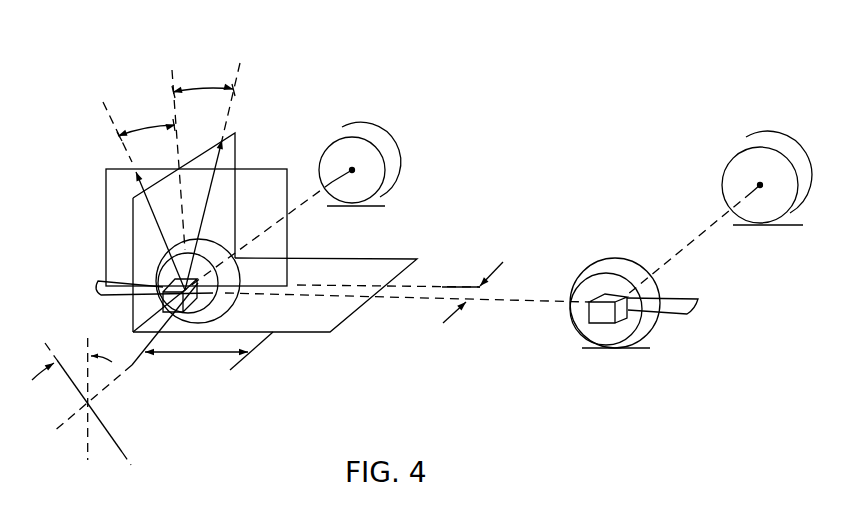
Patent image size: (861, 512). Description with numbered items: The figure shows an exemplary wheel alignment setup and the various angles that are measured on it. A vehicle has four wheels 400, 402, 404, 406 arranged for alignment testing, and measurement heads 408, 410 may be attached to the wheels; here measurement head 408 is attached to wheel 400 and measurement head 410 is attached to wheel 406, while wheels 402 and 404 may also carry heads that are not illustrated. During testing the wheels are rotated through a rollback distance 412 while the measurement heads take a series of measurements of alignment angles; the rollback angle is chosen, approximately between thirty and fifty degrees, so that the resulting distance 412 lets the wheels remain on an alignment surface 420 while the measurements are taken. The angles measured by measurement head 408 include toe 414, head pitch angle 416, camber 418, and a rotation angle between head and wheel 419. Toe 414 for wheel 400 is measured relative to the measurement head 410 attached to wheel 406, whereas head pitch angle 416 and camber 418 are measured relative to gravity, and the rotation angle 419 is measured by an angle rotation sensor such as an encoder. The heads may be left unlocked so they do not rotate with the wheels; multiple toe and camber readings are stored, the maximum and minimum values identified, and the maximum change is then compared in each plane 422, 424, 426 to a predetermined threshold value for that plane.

The wheel 400 is at (235, 296).
The wheel 402 is at (394, 150).
The wheel 404 is at (760, 147).
The wheel 406 is at (630, 334).
The measurement head 408 is at (160, 299).
The measurement head 410 is at (587, 317).
The rollback distance 412 is at (190, 354).
The toe 414 is at (448, 323).
The head pitch angle 416 is at (148, 129).
The camber 418 is at (205, 89).
The rotation angle between head and wheel 419 is at (73, 401).
The alignment surface 420 is at (372, 206).
The plane 422 is at (106, 194).
The plane 424 is at (236, 134).
The plane 426 is at (313, 340).